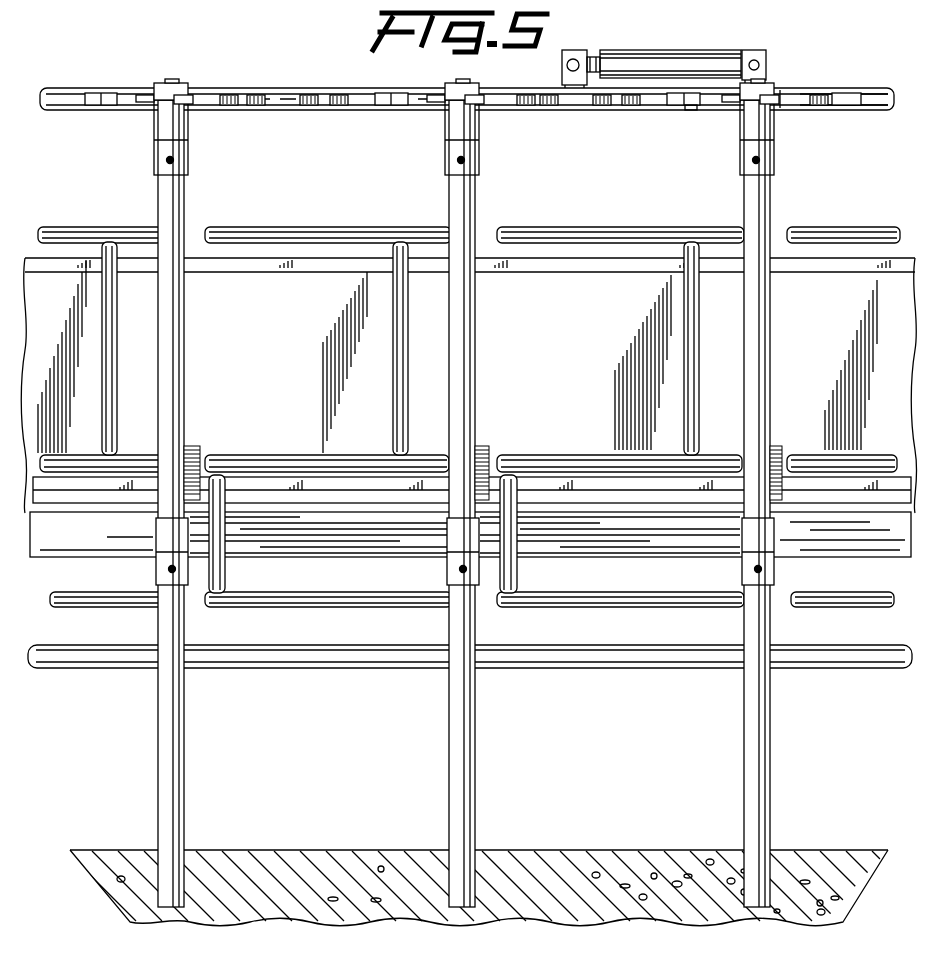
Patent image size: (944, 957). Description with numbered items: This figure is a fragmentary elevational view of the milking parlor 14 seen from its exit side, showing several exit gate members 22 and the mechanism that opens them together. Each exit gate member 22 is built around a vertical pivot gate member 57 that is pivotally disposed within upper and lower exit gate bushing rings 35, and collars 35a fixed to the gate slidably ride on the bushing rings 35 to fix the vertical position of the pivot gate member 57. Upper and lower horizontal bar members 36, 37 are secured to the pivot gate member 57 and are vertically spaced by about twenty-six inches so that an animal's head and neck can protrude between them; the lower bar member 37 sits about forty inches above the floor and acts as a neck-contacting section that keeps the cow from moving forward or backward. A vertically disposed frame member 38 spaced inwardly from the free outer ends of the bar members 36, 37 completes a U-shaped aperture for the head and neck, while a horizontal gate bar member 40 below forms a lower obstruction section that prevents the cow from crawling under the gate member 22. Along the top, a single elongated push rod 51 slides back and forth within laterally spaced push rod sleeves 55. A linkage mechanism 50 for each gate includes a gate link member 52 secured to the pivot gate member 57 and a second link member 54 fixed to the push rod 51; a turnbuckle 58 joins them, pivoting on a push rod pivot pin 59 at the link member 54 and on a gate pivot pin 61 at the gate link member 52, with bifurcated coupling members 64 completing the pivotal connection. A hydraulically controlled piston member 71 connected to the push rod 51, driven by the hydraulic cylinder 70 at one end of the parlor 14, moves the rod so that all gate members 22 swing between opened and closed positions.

The parlor 14 is at (111, 72).
The exit gate member 22 is at (330, 212).
The exit gate bushing ring 35 is at (188, 160).
The collar 35a is at (167, 532).
The upper horizontal bar member 36 is at (593, 229).
The lower horizontal bar member 37 is at (550, 456).
The vertically disposed frame member 38 is at (410, 373).
The horizontal gate bar member 40 is at (340, 605).
The linkage mechanism 50 is at (540, 75).
The push rod 51 is at (804, 88).
The gate link member 52 is at (156, 95).
The second link member 54 is at (699, 110).
The push rod sleeve 55 is at (170, 83).
The vertical pivot gate member 57 is at (157, 125).
The turnbuckle 58 is at (286, 110).
The push rod pivot pin 59 is at (398, 110).
The gate pivot pin 61 is at (176, 91).
The bifurcated coupling member 64 is at (193, 99).
The hydraulic cylinder 70 is at (694, 57).
The hydraulically controlled piston member 71 is at (597, 50).